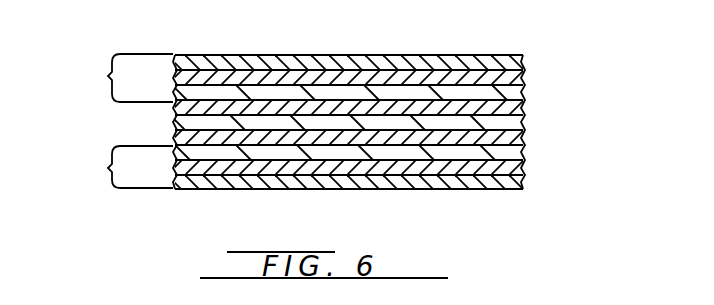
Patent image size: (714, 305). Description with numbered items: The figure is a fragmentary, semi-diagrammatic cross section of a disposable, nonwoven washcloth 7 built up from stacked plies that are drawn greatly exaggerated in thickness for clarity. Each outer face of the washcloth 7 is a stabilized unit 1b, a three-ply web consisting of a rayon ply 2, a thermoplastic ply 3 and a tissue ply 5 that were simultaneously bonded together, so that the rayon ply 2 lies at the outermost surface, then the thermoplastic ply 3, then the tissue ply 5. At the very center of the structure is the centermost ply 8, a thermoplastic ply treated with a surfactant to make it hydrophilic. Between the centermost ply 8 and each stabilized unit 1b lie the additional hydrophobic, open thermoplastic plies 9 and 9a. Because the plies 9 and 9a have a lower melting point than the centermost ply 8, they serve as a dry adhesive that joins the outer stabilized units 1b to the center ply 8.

The stabilized unit 1b is at (128, 121).
The rayon ply 2 is at (524, 58).
The thermoplastic ply 3 is at (524, 77).
The tissue ply 5 is at (524, 92).
The washcloth 7 is at (440, 52).
The centermost ply 8 is at (524, 123).
The thermoplastic ply 9 is at (524, 108).
The thermoplastic ply 9a is at (524, 140).